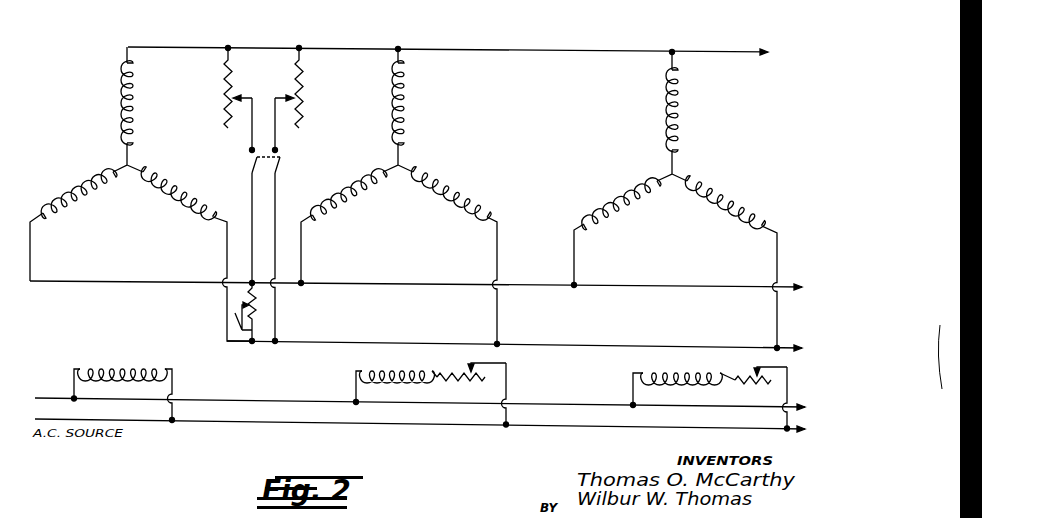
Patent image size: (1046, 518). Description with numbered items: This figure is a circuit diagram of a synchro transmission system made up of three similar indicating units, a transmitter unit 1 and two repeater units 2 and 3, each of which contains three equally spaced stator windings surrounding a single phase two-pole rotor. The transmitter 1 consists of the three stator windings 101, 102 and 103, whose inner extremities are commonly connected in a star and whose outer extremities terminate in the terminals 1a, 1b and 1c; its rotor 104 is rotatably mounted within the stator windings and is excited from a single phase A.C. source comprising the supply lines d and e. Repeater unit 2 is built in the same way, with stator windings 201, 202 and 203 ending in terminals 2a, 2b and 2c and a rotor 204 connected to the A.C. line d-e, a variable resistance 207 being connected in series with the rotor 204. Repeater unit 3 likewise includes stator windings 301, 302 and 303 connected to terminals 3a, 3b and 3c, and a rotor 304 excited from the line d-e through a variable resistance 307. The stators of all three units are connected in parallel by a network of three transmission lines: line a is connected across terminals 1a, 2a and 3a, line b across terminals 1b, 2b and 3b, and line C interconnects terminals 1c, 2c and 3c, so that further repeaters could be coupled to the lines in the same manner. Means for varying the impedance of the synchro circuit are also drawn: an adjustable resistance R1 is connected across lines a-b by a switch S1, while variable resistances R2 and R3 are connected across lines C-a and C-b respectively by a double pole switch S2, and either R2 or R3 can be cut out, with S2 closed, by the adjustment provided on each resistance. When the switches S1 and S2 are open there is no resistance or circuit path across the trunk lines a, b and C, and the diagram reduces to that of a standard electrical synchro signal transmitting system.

The transmitter unit 1 is at (141, 187).
The terminal 1a is at (31, 226).
The terminal 1b is at (223, 226).
The terminal 1c is at (127, 47).
The stator winding 101 is at (72, 190).
The stator winding 102 is at (190, 205).
The stator winding 103 is at (122, 86).
The rotor 104 is at (95, 368).
The repeater unit 2 is at (399, 189).
The terminal 2a is at (306, 227).
The terminal 2b is at (490, 231).
The terminal 2c is at (397, 48).
The stator winding 201 is at (350, 194).
The stator winding 202 is at (448, 188).
The stator winding 203 is at (410, 91).
The rotor 204 is at (384, 371).
The variable resistance 207 is at (463, 383).
The repeater unit 3 is at (676, 193).
The terminal 3a is at (579, 234).
The terminal 3b is at (770, 235).
The terminal 3c is at (662, 43).
The stator winding 301 is at (628, 193).
The stator winding 302 is at (722, 191).
The stator winding 303 is at (664, 90).
The rotor 304 is at (675, 373).
The variable resistance 307 is at (762, 399).
The adjustable resistance R1 is at (261, 313).
The variable resistance R2 is at (222, 83).
The variable resistance R3 is at (318, 86).
The switch S1 is at (233, 322).
The double pole switch S2 is at (284, 165).
The transmission line a is at (408, 283).
The transmission line b is at (395, 344).
The transmission line C is at (492, 51).
The supply line d is at (245, 398).
The supply line e is at (420, 419).